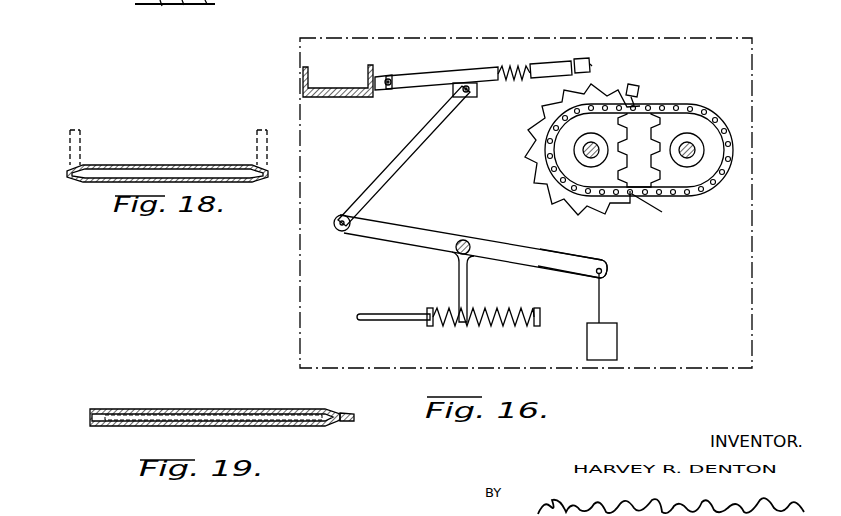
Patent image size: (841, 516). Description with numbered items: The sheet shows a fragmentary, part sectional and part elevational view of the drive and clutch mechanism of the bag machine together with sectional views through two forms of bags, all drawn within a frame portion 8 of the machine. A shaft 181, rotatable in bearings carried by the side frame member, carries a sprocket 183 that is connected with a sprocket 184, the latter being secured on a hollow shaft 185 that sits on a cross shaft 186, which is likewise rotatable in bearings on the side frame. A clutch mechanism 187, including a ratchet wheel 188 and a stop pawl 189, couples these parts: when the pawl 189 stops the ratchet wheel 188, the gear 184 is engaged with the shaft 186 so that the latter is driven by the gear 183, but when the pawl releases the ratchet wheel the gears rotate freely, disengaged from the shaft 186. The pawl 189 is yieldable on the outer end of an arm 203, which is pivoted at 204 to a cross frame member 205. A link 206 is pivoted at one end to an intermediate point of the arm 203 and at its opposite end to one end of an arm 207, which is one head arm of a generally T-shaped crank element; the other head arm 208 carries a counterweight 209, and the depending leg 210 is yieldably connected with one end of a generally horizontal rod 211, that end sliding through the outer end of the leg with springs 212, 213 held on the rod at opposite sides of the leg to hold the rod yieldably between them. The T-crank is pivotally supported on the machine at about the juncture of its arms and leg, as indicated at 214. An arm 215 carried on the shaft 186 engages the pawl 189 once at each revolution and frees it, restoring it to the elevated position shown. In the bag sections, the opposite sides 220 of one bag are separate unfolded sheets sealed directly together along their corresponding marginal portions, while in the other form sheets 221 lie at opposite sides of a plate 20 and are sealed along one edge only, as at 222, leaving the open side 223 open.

In FIG. 16, the frame 8 is at (758, 45).
In FIG. 19, the plate 20 is at (180, 410).
In FIG. 16, the shaft 181 is at (690, 146).
In FIG. 16, the sprocket 183 is at (716, 149).
In FIG. 16, the sprocket 184 is at (660, 208).
In FIG. 16, the hollow shaft 185 is at (580, 159).
In FIG. 16, the cross shaft 186 is at (584, 149).
In FIG. 16, the clutch mechanism 187 is at (518, 116).
In FIG. 16, the ratchet wheel 188 is at (550, 110).
In FIG. 16, the stop pawl 189 is at (588, 58).
In FIG. 16, the arm 203 is at (460, 78).
In FIG. 16, the pivot 204 is at (390, 80).
In FIG. 16, the cross frame member 205 is at (325, 92).
In FIG. 16, the link 206 is at (398, 165).
In FIG. 16, the arm 207 is at (410, 232).
In FIG. 16, the arm 208 is at (535, 256).
In FIG. 16, the counterweight 209 is at (617, 339).
In FIG. 16, the depending leg 210 is at (469, 288).
In FIG. 16, the rod 211 is at (390, 314).
In FIG. 16, the spring 212 is at (431, 327).
In FIG. 16, the spring 213 is at (502, 327).
In FIG. 16, the pivot 214 is at (468, 241).
In FIG. 16, the arm 215 is at (634, 85).
In FIG. 18, the opposite sides 220 is at (172, 176).
In FIG. 19, the sheets 221 is at (245, 416).
In FIG. 19, the sealed edge 222 is at (350, 414).
In FIG. 19, the open side 223 is at (85, 413).